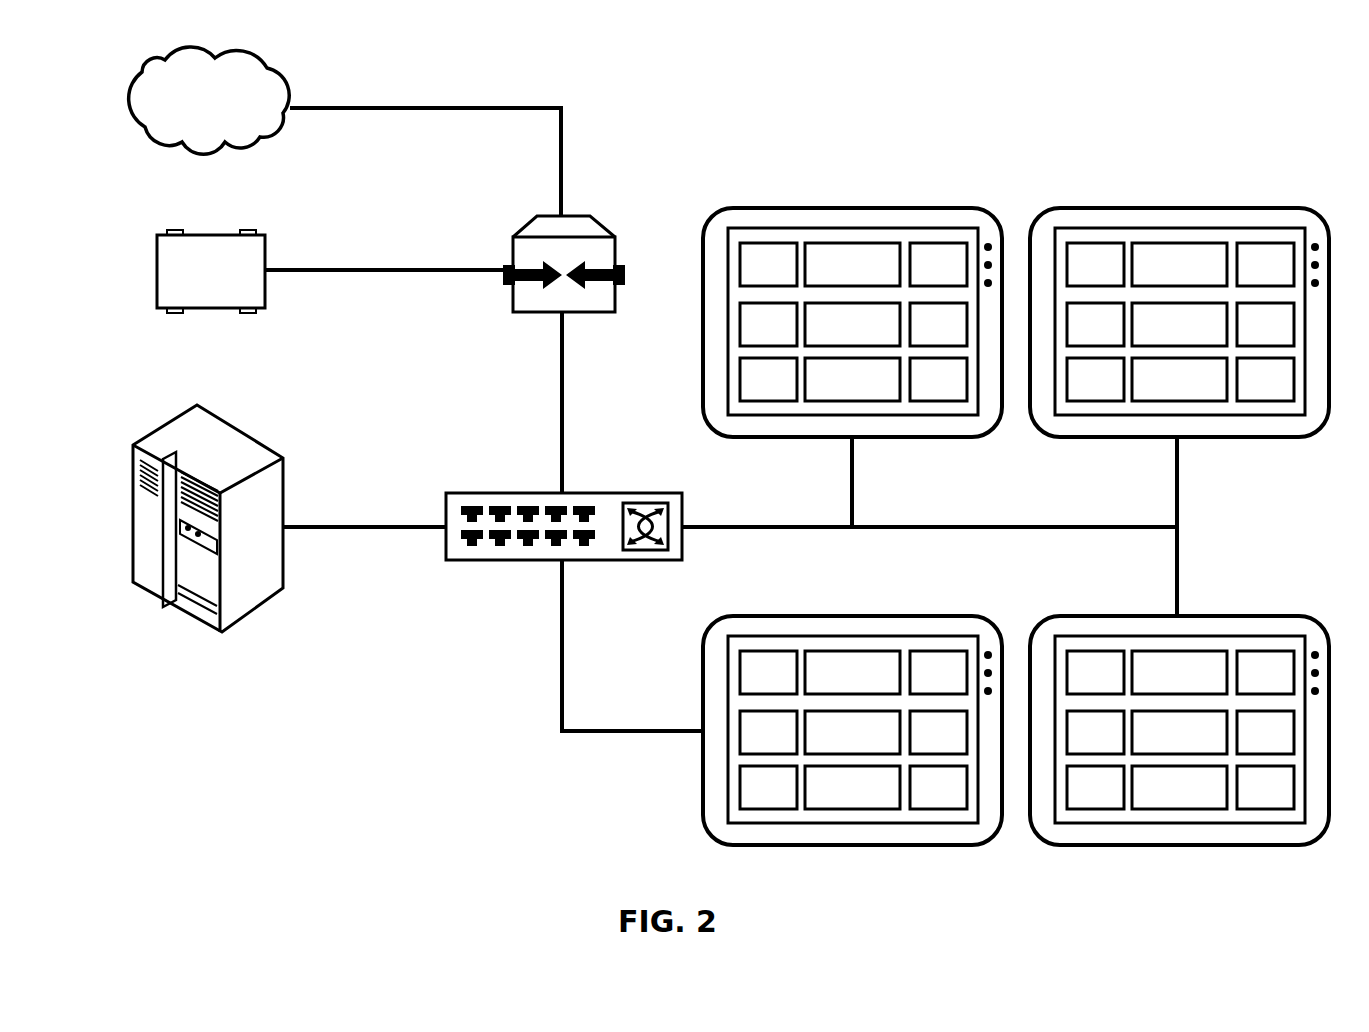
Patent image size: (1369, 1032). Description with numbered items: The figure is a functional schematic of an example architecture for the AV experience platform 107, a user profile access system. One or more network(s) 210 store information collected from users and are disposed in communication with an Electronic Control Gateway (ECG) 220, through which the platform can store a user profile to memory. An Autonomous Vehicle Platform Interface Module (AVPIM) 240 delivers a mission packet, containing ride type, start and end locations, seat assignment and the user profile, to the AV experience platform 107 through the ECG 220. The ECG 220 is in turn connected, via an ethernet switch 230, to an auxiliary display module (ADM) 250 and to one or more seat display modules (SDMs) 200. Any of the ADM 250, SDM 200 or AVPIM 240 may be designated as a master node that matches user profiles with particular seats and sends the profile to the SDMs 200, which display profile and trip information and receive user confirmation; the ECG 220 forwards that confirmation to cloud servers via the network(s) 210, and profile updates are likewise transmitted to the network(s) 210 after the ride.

The AV experience platform 107 is at (1300, 110).
The seat display module (SDM) 200 is at (958, 208).
The network(s) 210 is at (283, 72).
The Electronic Control Gateway (ECG) 220 is at (590, 218).
The ethernet switch 230 is at (578, 493).
The Autonomous Vehicle Platform Interface Module (AVPIM) 240 is at (265, 233).
The auxiliary display module (ADM) 250 is at (265, 437).